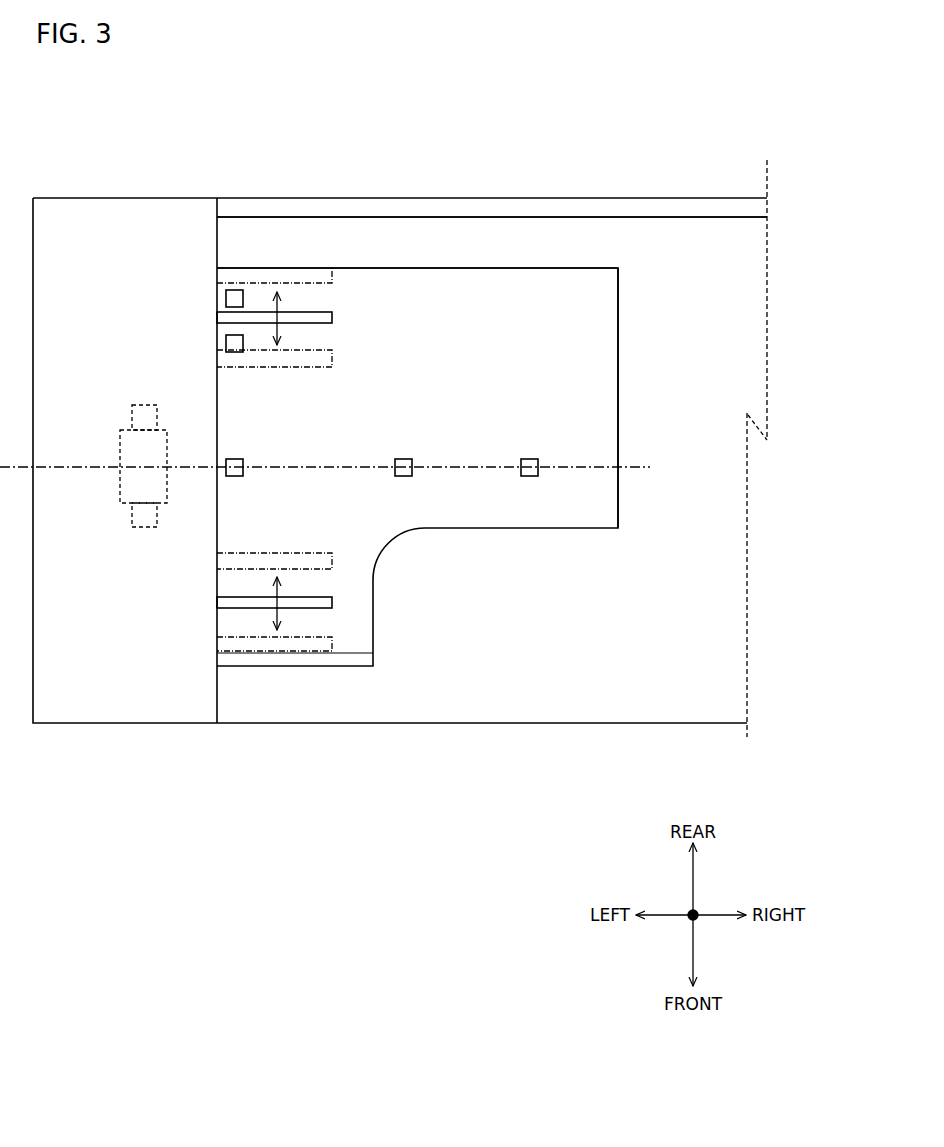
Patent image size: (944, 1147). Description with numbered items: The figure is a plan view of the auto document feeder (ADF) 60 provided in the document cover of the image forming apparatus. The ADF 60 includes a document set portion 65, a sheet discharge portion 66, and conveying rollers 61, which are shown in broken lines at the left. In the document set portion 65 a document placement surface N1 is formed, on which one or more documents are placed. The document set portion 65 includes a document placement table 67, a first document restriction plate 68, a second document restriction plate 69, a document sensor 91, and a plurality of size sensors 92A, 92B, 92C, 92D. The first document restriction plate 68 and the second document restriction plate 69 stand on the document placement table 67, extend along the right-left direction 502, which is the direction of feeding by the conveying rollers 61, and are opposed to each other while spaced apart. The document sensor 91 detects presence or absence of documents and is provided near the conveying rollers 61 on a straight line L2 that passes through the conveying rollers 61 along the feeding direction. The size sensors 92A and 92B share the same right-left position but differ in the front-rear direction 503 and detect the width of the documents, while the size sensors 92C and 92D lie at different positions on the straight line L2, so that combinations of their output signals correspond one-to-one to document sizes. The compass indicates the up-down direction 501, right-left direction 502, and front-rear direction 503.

The auto document feeder (ADF) 60 is at (170, 228).
The conveying rollers 61 is at (112, 447).
The document set portion 65 is at (419, 252).
The sheet discharge portion 66 is at (655, 509).
The document placement table 67 is at (619, 323).
The first document restriction plate 68 is at (333, 318).
The second document restriction plate 69 is at (333, 601).
The document sensor 91 is at (238, 458).
The size sensor 92A is at (238, 289).
The size sensor 92B is at (236, 353).
The size sensor 92C is at (408, 458).
The size sensor 92D is at (534, 458).
The document placement surface N1 is at (475, 347).
The straight line L2 is at (339, 468).
The up-down direction 501 is at (700, 921).
The right-left direction 502 is at (672, 910).
The front-rear direction 503 is at (690, 880).